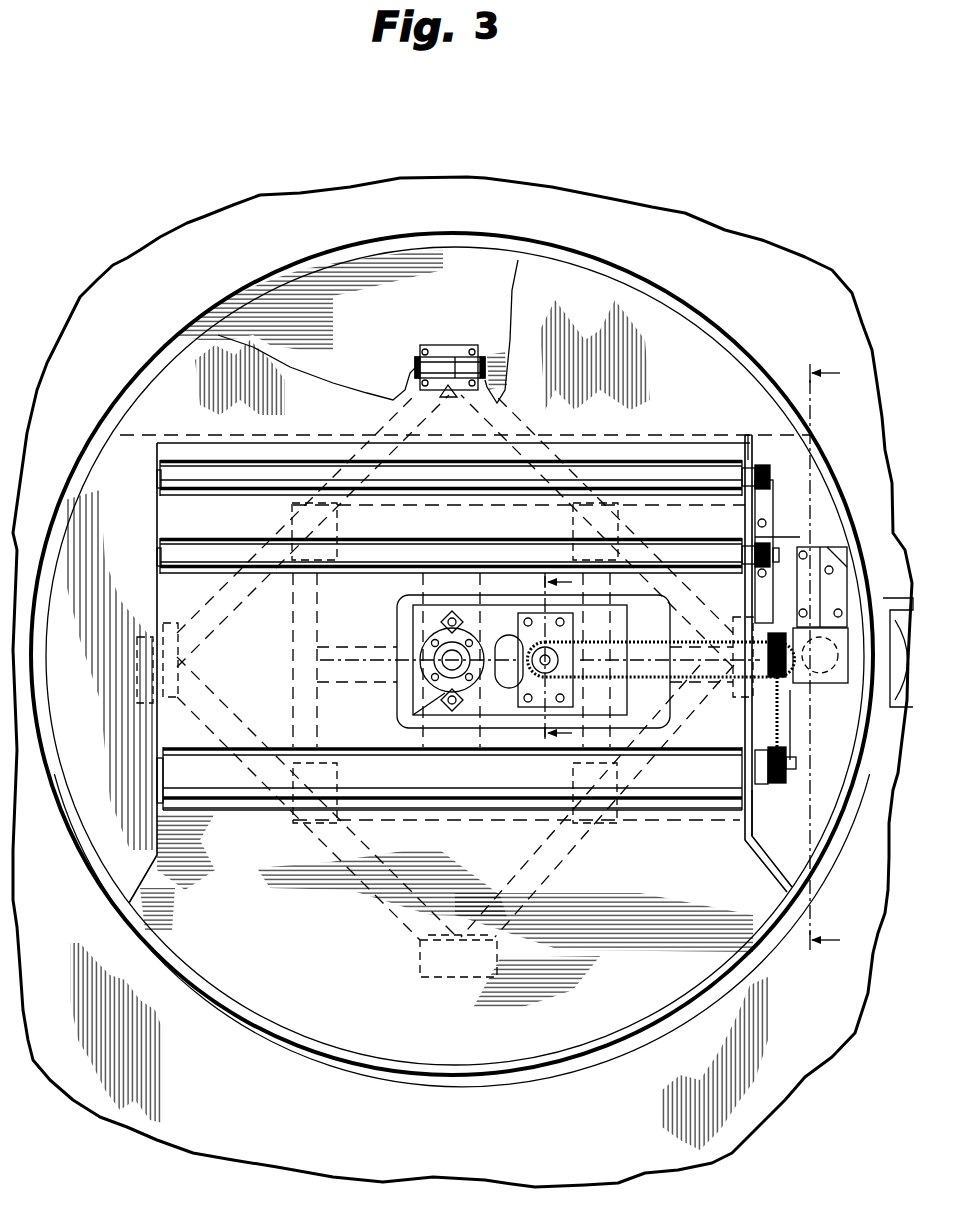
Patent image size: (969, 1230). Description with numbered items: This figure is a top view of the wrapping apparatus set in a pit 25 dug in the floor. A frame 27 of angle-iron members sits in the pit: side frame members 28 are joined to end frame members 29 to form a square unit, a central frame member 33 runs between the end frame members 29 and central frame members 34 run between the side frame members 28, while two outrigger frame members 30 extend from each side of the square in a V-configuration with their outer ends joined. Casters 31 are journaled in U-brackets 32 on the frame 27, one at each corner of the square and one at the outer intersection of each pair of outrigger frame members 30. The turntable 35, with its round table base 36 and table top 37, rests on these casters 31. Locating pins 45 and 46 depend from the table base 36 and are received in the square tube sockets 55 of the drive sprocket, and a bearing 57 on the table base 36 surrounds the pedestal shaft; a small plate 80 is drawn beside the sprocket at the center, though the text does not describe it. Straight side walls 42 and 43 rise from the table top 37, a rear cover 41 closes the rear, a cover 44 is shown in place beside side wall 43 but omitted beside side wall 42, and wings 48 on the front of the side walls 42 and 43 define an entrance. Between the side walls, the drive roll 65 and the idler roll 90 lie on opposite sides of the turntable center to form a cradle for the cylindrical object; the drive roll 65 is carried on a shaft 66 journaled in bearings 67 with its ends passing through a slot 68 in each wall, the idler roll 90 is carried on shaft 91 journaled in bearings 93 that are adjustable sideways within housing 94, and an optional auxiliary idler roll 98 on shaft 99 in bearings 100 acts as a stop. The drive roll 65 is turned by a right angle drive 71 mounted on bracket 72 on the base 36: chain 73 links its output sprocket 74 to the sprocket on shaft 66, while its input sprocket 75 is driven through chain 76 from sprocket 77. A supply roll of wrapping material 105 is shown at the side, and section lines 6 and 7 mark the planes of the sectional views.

The pit 25 is at (168, 352).
The turntable 35 is at (433, 247).
The table top 37 is at (443, 253).
The table base 36 is at (376, 318).
The rear cover 41 is at (626, 335).
The cover 44 is at (134, 510).
The side wall 43 is at (157, 513).
The side wall 42 is at (745, 510).
The wings 48 is at (153, 880).
The auxiliary idler roll 98 is at (676, 460).
The idler roll 90 is at (662, 540).
The drive roll 65 is at (700, 778).
The end frame members 29 is at (420, 526).
The outrigger frame members 30 is at (385, 418).
The casters 31 is at (465, 345).
The frame 27 is at (404, 388).
The U-brackets 32 is at (440, 345).
The locating pin 46 is at (397, 722).
The central frame members 34 is at (413, 652).
The locating pin 45 is at (452, 612).
The bearing 57 is at (420, 660).
The square tube sockets 55 is at (441, 620).
The central frame member 33 is at (410, 585).
The sprocket mounting plate 80 is at (520, 680).
The sprocket 77 is at (536, 652).
The chain 76 is at (662, 642).
The side frame members 28 is at (293, 650).
The section line 6 is at (548, 659).
The section line 7 is at (815, 657).
The shaft 99 is at (770, 470).
The housing 94 is at (773, 494).
The shaft 91 is at (779, 553).
The bearings 100 is at (756, 432).
The bearings 93 is at (775, 538).
The bracket 72 is at (845, 583).
The right angle drive 71 is at (832, 667).
The output sprocket 74 is at (786, 677).
The chain 73 is at (790, 705).
The input sprocket 75 is at (822, 725).
The shaft 66 is at (793, 770).
The bearings 67 is at (785, 785).
The slot 68 is at (758, 800).
The supply roll of wrapping material 105 is at (890, 673).